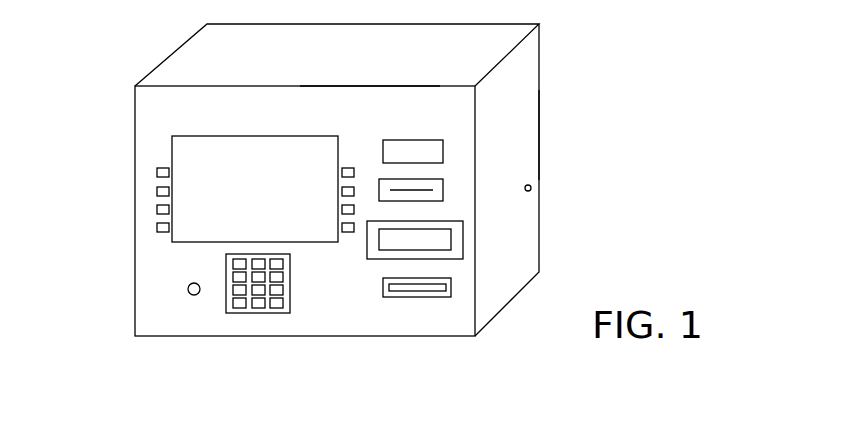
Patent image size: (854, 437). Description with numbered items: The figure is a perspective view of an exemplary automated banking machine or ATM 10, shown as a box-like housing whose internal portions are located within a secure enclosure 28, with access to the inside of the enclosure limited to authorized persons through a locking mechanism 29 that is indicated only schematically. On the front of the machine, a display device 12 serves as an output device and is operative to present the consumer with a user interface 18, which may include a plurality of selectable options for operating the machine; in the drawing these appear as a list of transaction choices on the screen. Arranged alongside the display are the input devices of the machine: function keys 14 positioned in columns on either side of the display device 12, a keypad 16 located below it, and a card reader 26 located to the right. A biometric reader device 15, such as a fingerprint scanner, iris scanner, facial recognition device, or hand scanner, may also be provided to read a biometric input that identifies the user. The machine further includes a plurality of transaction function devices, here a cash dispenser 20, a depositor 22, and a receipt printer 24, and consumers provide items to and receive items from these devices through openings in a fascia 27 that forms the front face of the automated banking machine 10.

The automated banking machine 10 is at (565, 57).
The display device 12 is at (172, 150).
The function keys 14 is at (159, 245).
The biometric reader device 15 is at (204, 293).
The keypad 16 is at (258, 313).
The user interface 18 is at (208, 145).
The cash dispenser 20 is at (463, 235).
The depositor 22 is at (451, 283).
The receipt printer 24 is at (443, 150).
The card reader 26 is at (443, 189).
The fascia 27 is at (367, 112).
The secure enclosure 28 is at (527, 132).
The locking mechanism 29 is at (533, 185).